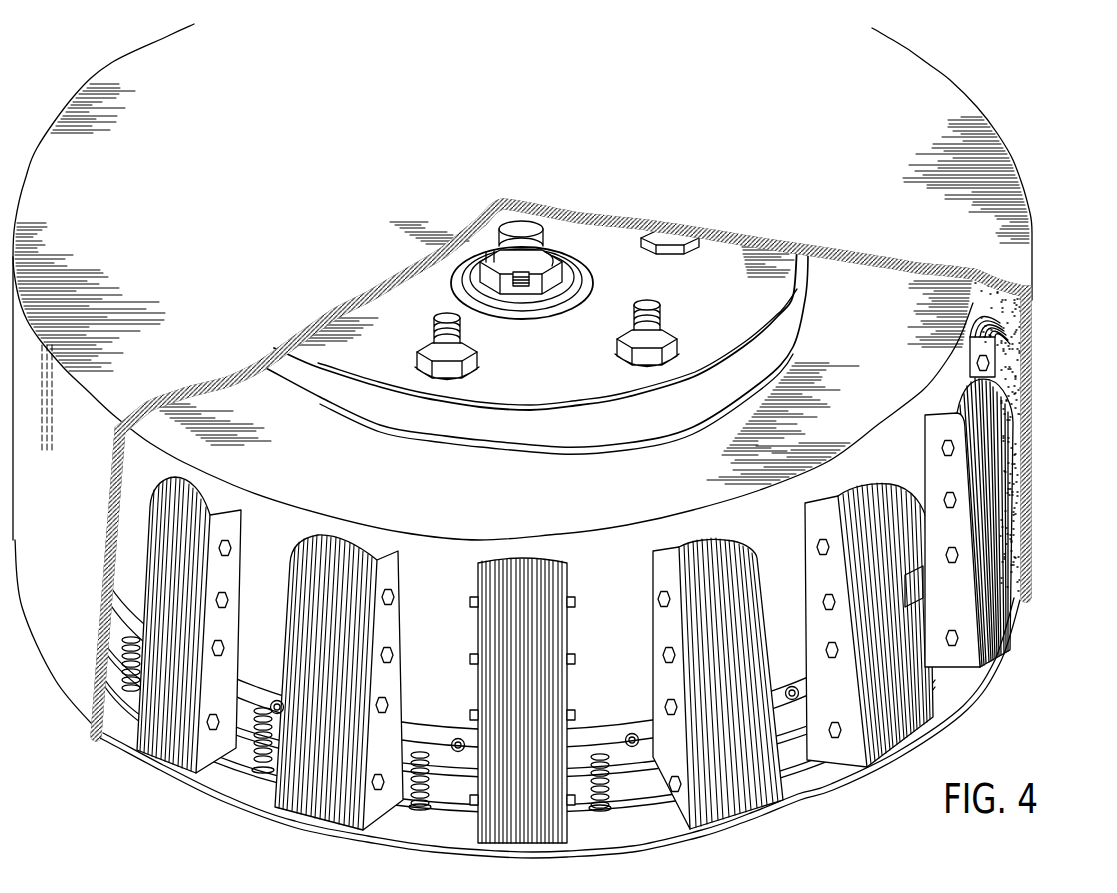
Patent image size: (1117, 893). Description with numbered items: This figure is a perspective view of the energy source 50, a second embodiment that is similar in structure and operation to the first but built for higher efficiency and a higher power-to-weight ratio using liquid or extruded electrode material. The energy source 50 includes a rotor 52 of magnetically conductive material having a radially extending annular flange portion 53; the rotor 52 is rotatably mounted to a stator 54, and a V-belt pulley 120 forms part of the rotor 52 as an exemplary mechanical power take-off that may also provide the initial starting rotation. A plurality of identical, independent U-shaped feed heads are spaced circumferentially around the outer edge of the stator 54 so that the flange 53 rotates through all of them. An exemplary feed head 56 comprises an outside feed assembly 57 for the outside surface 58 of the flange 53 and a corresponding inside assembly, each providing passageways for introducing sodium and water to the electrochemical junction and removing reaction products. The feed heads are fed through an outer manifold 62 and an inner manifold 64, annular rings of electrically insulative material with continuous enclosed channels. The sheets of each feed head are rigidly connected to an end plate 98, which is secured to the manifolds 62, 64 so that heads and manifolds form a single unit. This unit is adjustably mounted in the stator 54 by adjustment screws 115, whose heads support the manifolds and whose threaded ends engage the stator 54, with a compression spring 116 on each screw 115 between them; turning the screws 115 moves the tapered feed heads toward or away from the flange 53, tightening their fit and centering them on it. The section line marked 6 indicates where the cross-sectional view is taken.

The section line 6- 6 is at (104, 751).
The energy source 50 is at (1003, 698).
The rotor 52 is at (865, 380).
The annular flange portion 53 is at (446, 590).
The stator 54 is at (606, 722).
The feed head 56 is at (133, 746).
The outside feed assembly 57 is at (149, 760).
The outside surface 58 is at (657, 629).
The outer manifold 62 is at (643, 838).
The inner manifold 64 is at (640, 799).
The end plate 98 is at (152, 507).
The adjustment screws 115 is at (414, 794).
The spring 116 is at (433, 803).
The V-belt pulley 120 is at (740, 297).